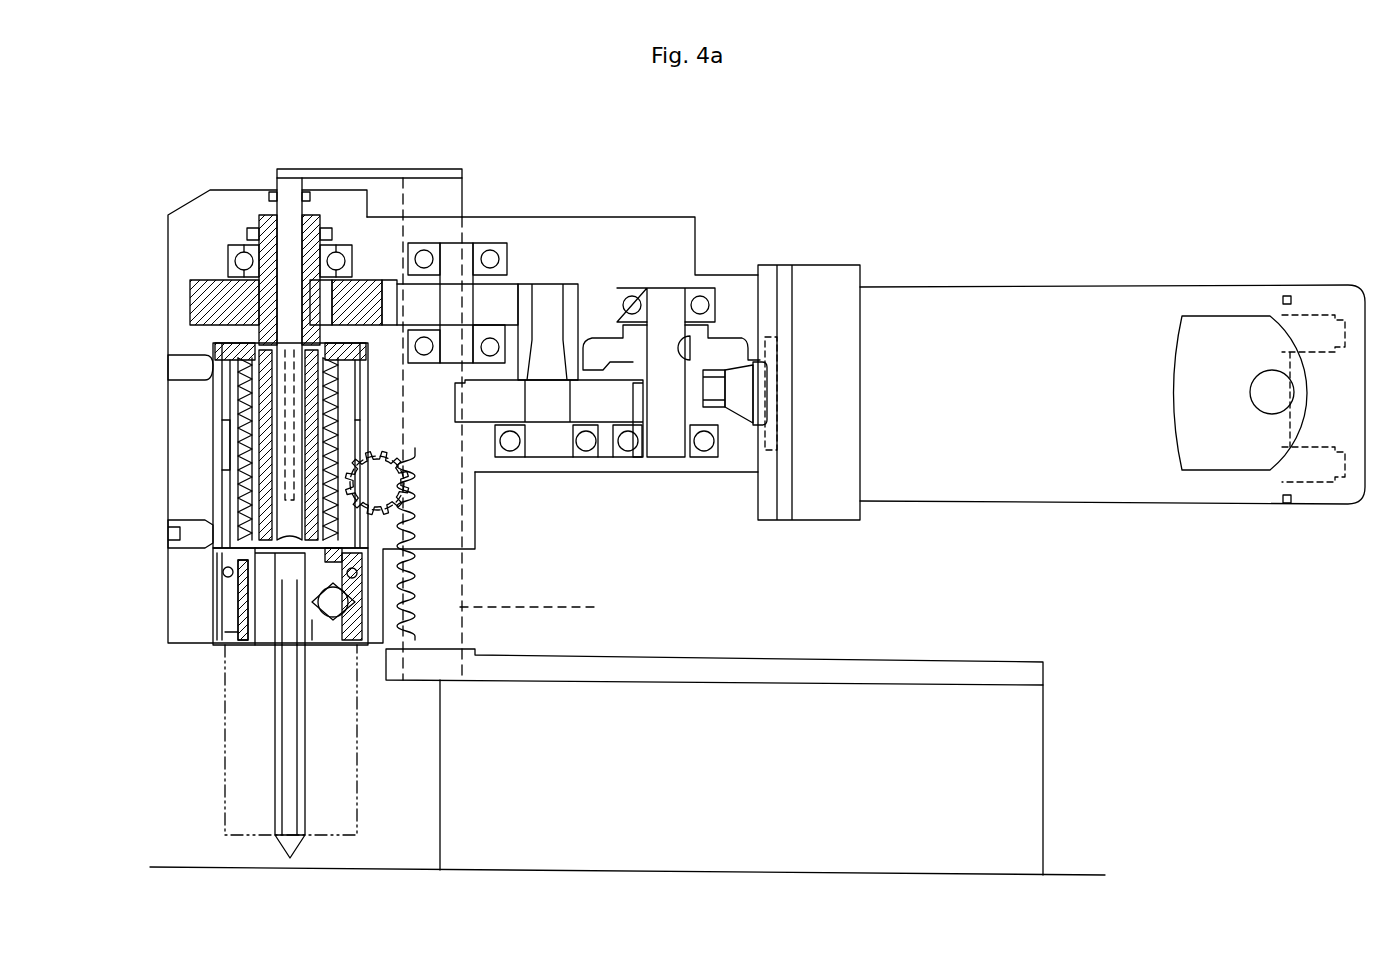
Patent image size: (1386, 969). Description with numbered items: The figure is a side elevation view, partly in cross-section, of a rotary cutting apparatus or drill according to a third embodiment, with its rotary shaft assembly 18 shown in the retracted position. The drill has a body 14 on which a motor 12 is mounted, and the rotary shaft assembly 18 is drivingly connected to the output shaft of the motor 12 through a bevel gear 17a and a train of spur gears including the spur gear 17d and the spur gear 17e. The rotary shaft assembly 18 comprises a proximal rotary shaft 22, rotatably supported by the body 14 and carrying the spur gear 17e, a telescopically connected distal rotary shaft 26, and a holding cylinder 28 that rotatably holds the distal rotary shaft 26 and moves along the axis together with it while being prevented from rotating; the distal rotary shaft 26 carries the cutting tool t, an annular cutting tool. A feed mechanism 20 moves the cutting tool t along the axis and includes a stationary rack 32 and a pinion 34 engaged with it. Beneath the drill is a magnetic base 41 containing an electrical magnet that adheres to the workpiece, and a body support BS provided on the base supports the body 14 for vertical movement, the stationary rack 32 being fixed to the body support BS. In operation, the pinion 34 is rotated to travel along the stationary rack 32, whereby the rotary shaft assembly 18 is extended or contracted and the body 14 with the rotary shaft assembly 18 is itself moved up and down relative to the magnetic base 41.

The motor 12 is at (1040, 288).
The body 14 is at (605, 230).
The bevel gear 17a is at (730, 328).
The spur gear 17d is at (508, 280).
The spur gear 17e is at (357, 282).
The rotary shaft assembly 18 is at (192, 236).
The feed mechanism 20 is at (442, 620).
The proximal rotary shaft 22 is at (315, 217).
The distal rotary shaft 26 is at (247, 558).
The holding cylinder 28 is at (222, 393).
The stationary rack 32 is at (417, 573).
The pinion 34 is at (386, 494).
The magnetic base 41 is at (741, 777).
The body support BS is at (550, 606).
The cutting tool t is at (357, 728).